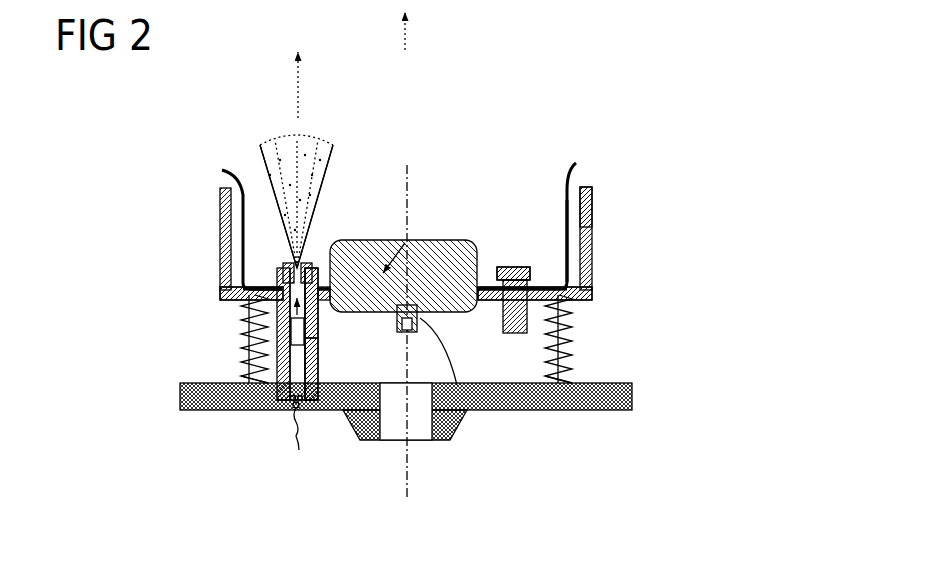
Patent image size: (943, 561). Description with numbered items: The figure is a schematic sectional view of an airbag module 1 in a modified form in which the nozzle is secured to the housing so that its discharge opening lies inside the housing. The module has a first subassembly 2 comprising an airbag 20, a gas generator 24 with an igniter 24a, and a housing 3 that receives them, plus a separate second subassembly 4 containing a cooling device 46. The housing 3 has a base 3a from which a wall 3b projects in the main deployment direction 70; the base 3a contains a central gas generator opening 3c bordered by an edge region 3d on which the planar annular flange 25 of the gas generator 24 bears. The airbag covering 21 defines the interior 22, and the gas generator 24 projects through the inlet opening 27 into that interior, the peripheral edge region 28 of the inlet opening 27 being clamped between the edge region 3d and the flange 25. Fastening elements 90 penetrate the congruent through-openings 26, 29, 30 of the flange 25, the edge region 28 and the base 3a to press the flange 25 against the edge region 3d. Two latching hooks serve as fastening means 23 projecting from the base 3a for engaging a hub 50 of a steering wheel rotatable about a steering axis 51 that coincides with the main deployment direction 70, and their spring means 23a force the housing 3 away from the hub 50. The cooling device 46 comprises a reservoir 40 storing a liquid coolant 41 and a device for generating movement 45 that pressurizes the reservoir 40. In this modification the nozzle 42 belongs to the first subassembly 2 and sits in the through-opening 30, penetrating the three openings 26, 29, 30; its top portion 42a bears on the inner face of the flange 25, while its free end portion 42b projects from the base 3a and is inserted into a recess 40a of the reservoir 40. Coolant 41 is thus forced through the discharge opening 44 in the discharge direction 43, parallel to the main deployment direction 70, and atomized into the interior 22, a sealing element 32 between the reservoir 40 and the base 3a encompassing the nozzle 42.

The airbag module 1 is at (217, 229).
The first subassembly 2 is at (607, 212).
The housing 3 is at (589, 194).
The base 3a is at (290, 327).
The wall 3b is at (221, 248).
The gas generator opening 3c is at (386, 312).
The edge region 3d is at (493, 300).
The second subassembly 4 is at (282, 420).
The airbag 20 is at (577, 157).
The airbag covering 21 is at (570, 205).
The interior 22 is at (388, 215).
The fastening means 23 is at (232, 330).
The spring means 23a is at (215, 410).
The gas generator 24 is at (437, 258).
The igniter 24a is at (457, 385).
The flange 25 is at (494, 287).
The through-opening 26 is at (240, 283).
The inlet opening 27 is at (405, 243).
The edge region 28 is at (300, 266).
The through-opening 29 is at (258, 290).
The through-opening 30 is at (250, 299).
The sealing element 32 is at (317, 307).
The reservoir 40 is at (272, 406).
The recess 40a is at (325, 310).
The coolant 41 is at (284, 140).
The nozzle 42 is at (298, 266).
The top portion 42a is at (297, 266).
The free end portion 42b is at (260, 340).
The discharge direction 43 is at (312, 85).
The discharge opening 44 is at (298, 266).
The device for generating movement 45 is at (299, 425).
The cooling device 46 is at (314, 425).
The hub 50 is at (566, 410).
The steering axis 51 is at (410, 452).
The main deployment direction 70 is at (420, 31).
The fastening elements 90 is at (517, 333).